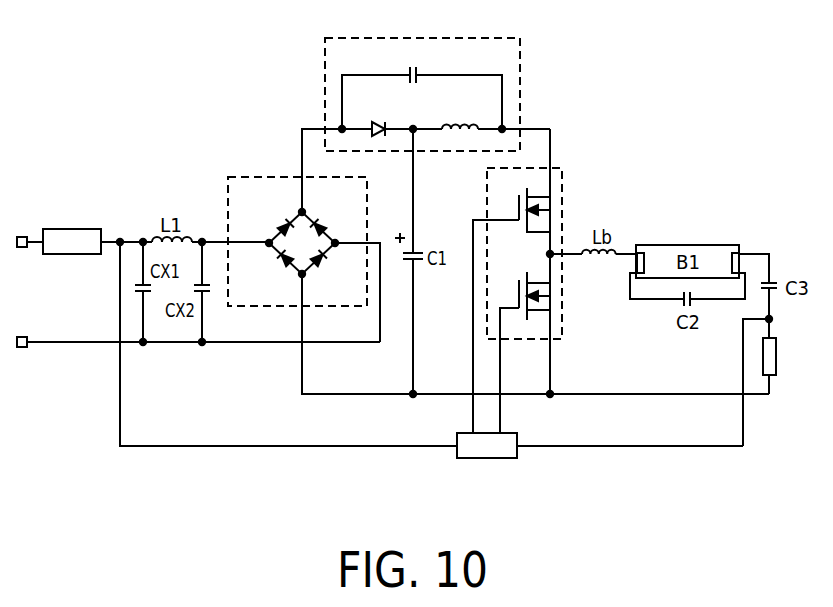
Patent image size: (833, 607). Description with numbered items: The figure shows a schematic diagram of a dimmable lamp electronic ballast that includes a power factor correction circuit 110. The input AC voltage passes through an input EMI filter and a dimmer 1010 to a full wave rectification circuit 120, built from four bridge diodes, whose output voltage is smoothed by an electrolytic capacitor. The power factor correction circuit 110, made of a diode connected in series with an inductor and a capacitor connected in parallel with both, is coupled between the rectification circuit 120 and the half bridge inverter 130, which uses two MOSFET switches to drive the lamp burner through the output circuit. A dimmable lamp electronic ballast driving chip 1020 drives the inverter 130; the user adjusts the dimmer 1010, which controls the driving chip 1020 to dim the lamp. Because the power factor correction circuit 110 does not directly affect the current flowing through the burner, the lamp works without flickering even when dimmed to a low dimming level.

The dimmer 1010 is at (73, 229).
The power factor correction circuit 110 is at (325, 58).
The full wave rectification circuit 120 is at (253, 177).
The half bridge inverter 130 is at (562, 190).
The dimmable lamp electronic ballast driving chip 1020 is at (487, 462).